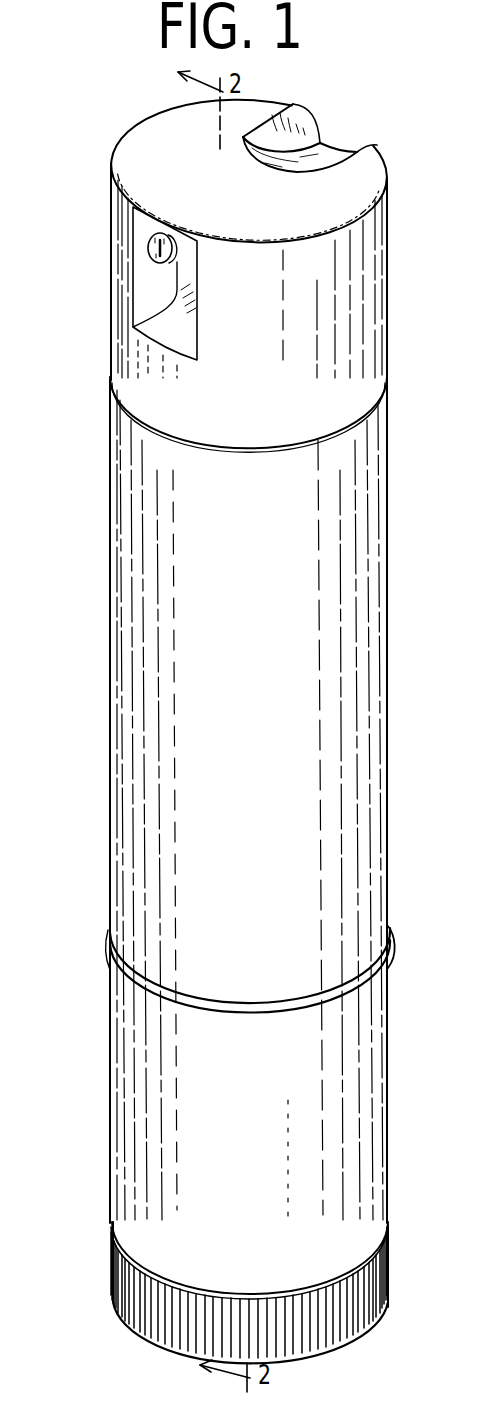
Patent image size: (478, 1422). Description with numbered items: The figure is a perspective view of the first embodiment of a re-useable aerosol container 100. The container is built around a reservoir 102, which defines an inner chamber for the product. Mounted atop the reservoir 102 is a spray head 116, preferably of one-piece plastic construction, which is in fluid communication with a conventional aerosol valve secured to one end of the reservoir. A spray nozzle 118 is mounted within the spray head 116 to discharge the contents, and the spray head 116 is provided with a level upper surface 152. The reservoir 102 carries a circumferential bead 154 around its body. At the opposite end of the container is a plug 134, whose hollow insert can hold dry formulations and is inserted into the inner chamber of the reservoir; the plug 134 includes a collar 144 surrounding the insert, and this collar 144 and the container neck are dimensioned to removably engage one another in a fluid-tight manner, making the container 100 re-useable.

The re-useable aerosol container 100 is at (88, 560).
The reservoir 102 is at (388, 497).
The spray head 116 is at (388, 330).
The spray nozzle 118 is at (148, 260).
The level upper surface 152 is at (276, 218).
The circumferential bead 154 is at (112, 938).
The collar 144 is at (113, 1272).
The plug 134 is at (360, 1328).